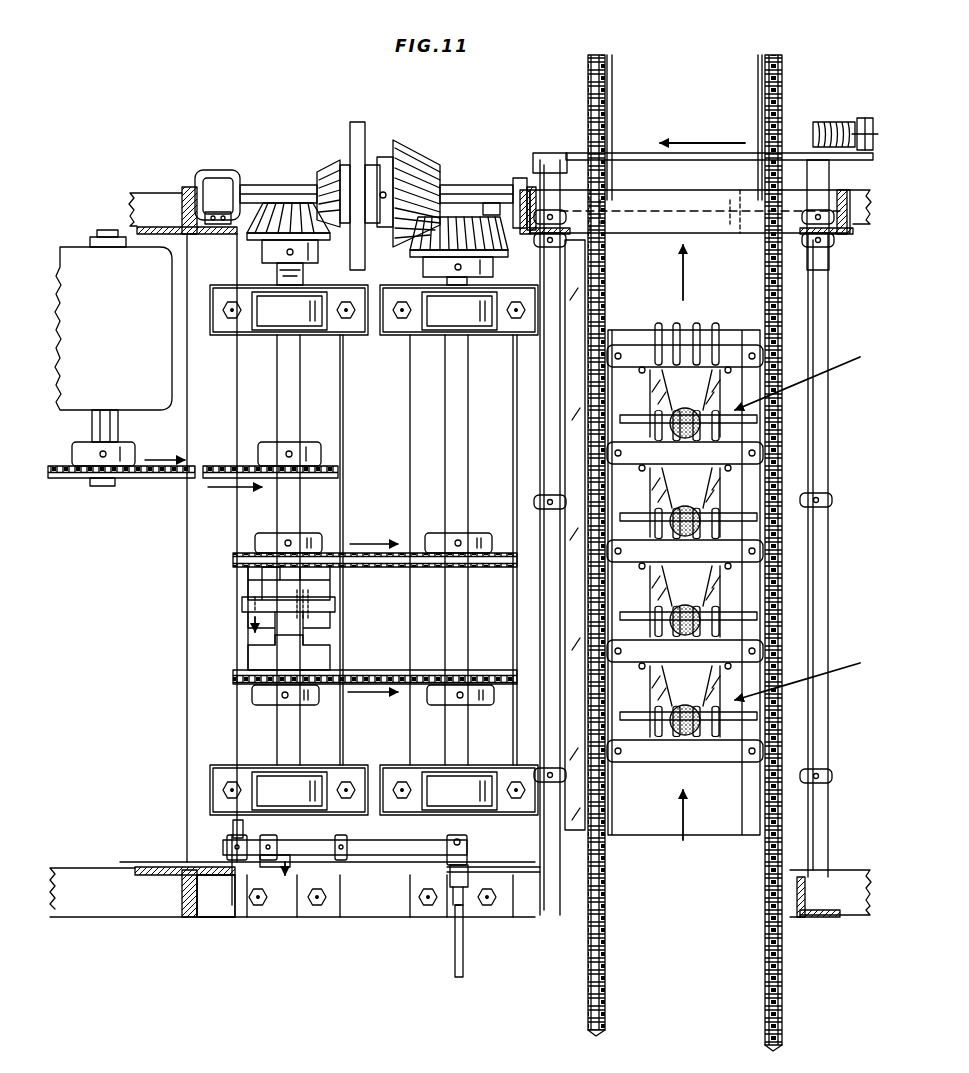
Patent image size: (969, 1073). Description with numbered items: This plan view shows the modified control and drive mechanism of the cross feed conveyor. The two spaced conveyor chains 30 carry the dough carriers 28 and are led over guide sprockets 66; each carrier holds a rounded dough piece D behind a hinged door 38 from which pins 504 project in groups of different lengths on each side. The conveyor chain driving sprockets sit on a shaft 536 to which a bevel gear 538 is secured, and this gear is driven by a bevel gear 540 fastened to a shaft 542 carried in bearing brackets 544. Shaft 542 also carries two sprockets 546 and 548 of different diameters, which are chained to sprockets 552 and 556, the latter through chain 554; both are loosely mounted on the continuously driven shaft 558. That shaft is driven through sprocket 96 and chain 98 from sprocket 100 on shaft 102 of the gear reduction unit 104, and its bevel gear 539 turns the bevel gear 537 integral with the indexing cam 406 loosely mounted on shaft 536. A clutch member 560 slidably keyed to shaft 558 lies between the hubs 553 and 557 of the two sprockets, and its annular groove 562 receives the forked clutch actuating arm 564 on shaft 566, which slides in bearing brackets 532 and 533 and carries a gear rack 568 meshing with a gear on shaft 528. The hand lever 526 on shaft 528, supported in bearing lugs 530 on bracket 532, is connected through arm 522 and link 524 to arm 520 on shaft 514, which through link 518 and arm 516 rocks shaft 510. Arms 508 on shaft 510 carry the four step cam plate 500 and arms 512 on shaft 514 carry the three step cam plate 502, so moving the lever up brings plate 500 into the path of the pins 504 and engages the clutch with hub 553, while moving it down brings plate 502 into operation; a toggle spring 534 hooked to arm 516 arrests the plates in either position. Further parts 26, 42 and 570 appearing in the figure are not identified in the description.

The carrier bar 26 is at (714, 338).
The dough carrier 28 is at (800, 525).
The conveyor chain 30 is at (604, 60).
The hinged door 38 is at (714, 440).
The shaft 42 is at (688, 210).
The guide sprocket 66 is at (612, 111).
The sprocket 96 is at (272, 442).
The chain 98 is at (220, 463).
The sprocket 100 is at (92, 480).
The shaft 102 is at (110, 230).
The gear reduction unit 104 is at (144, 406).
The cam 406 is at (358, 121).
The four step cam plate 500 is at (760, 430).
The three step cam plate 502 is at (563, 400).
The pin 504 is at (647, 514).
The arm 508 is at (832, 498).
The horizontal shaft 510 is at (828, 328).
The arm 512 is at (535, 492).
The horizontal shaft 514 is at (556, 300).
The arm 516 is at (814, 160).
The link 518 is at (700, 159).
The arm 520 is at (560, 160).
The arm 522 is at (480, 868).
The link 524 is at (455, 911).
The hand or control lever 526 is at (458, 975).
The horizontal shaft 528 is at (414, 855).
The bearing lug 530 is at (245, 878).
The bracket 532 is at (235, 826).
The bearing bracket 533 is at (260, 325).
The toggle spring 534 is at (841, 120).
The shaft 536 is at (282, 186).
The bevel gear 537 is at (325, 169).
The bevel gear 538 is at (405, 150).
The bevel gear 539 is at (255, 235).
The bevel gear 540 is at (454, 216).
The shaft 542 is at (445, 404).
The bearing bracket 544 is at (420, 310).
The sprocket 546 is at (448, 533).
The sprocket 548 is at (450, 665).
The sprocket 552 is at (308, 543).
The hub 553 is at (320, 584).
The chain 554 is at (401, 692).
The sprocket 556 is at (258, 693).
The hub 557 is at (320, 650).
The shaft 558 is at (283, 388).
The clutch member 560 is at (320, 608).
The annular groove 562 is at (250, 588).
The clutch actuating arm 564 is at (242, 608).
The shaft 566 is at (282, 288).
The gear rack 568 is at (244, 916).
The block 570 is at (277, 912).
The dough piece D is at (680, 415).